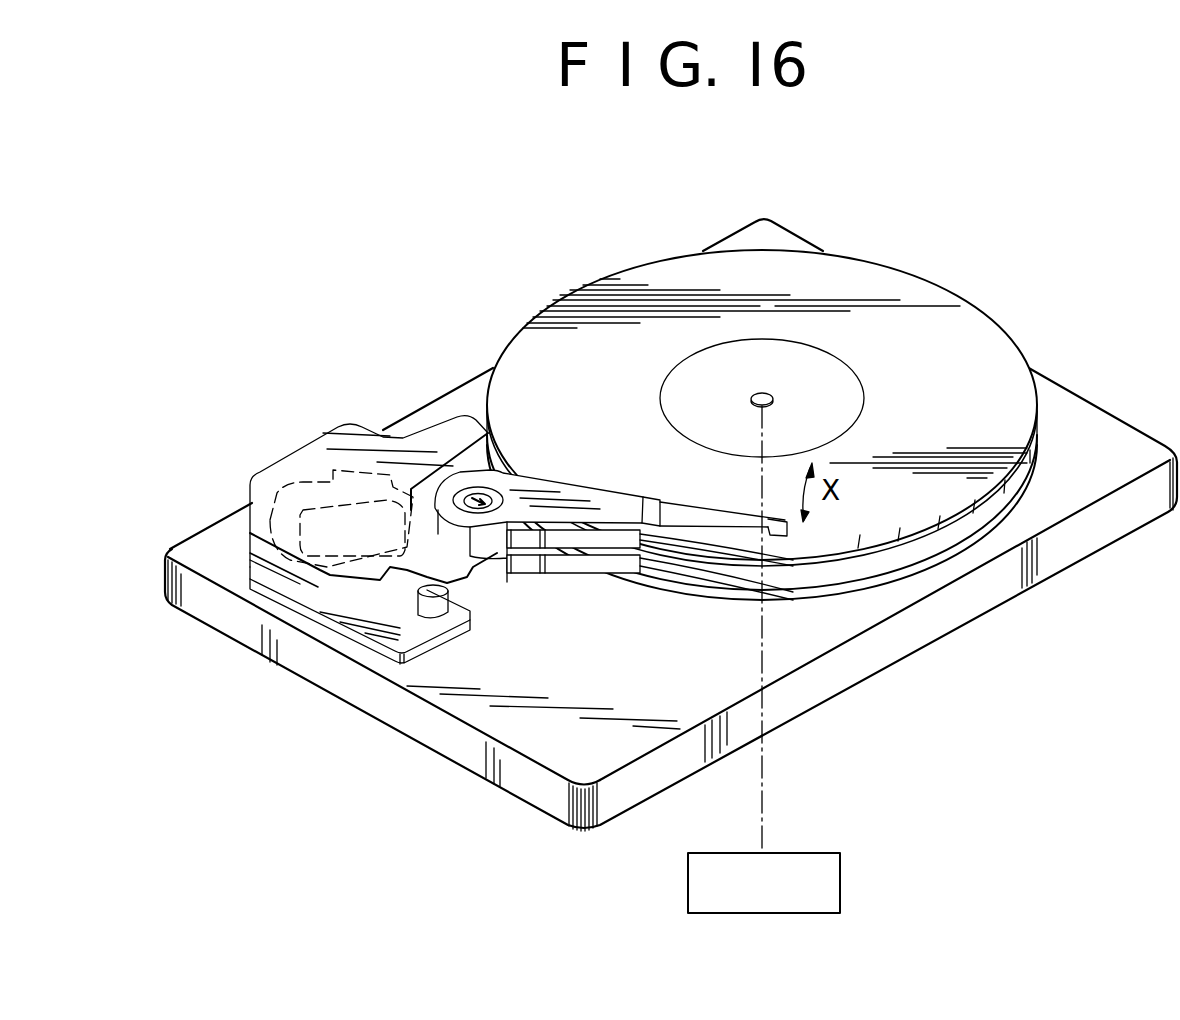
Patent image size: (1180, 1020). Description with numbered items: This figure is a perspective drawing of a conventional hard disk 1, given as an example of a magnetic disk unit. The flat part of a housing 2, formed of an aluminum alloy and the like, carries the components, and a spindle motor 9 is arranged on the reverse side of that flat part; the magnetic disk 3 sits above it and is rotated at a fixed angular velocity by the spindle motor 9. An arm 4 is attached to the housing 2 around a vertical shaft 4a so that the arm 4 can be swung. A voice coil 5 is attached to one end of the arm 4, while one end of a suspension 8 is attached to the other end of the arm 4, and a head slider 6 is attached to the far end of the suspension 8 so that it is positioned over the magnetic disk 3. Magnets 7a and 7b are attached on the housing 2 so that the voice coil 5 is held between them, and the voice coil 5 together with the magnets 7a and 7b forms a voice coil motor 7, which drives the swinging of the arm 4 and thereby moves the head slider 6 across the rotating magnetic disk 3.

The hard disk 1 is at (1020, 289).
The housing 2 is at (497, 725).
The magnetic disk 3 is at (620, 275).
The arm 4 is at (600, 508).
The vertical shaft 4a is at (483, 512).
The voice coil 5 is at (283, 570).
The head slider 6 is at (780, 536).
The voice coil motor 7 is at (350, 539).
The magnet 7a is at (268, 477).
The magnet 7b is at (383, 637).
The suspension 8 is at (703, 522).
The spindle motor 9 is at (840, 883).